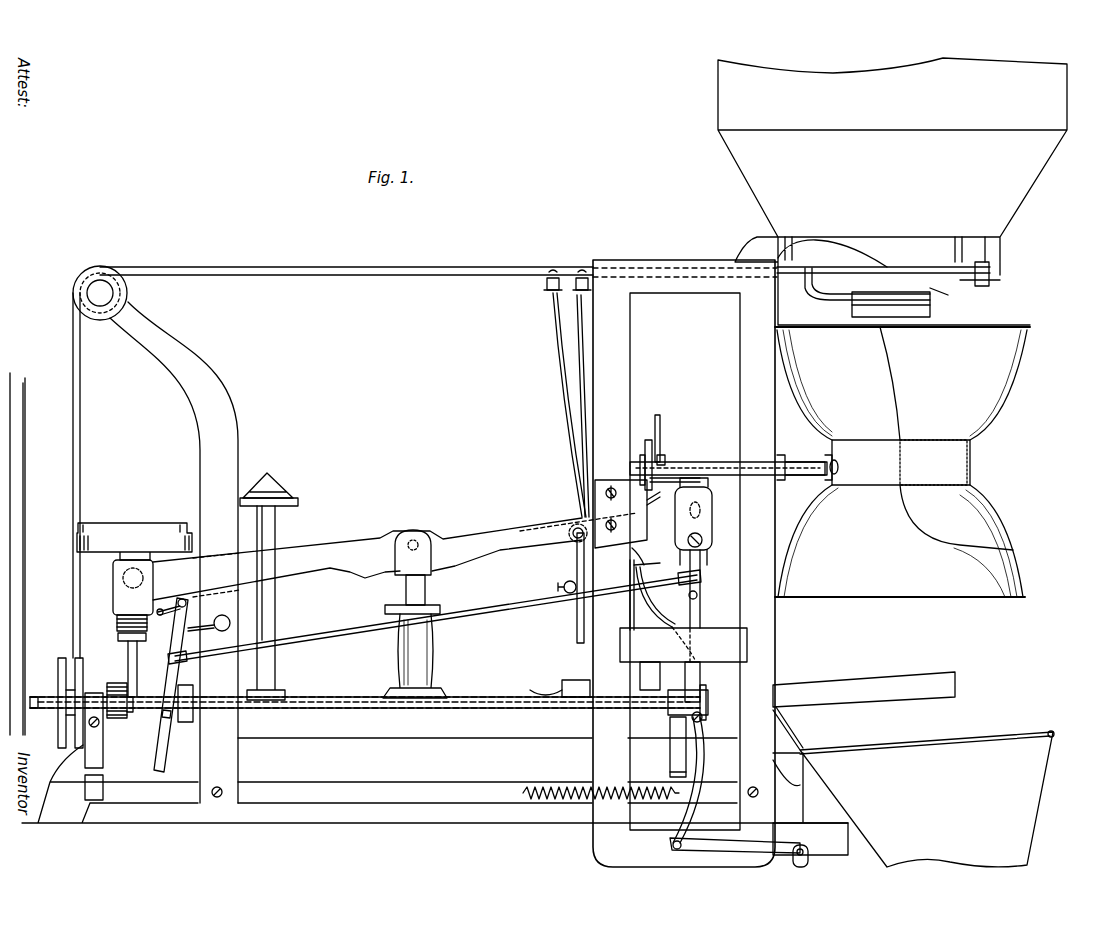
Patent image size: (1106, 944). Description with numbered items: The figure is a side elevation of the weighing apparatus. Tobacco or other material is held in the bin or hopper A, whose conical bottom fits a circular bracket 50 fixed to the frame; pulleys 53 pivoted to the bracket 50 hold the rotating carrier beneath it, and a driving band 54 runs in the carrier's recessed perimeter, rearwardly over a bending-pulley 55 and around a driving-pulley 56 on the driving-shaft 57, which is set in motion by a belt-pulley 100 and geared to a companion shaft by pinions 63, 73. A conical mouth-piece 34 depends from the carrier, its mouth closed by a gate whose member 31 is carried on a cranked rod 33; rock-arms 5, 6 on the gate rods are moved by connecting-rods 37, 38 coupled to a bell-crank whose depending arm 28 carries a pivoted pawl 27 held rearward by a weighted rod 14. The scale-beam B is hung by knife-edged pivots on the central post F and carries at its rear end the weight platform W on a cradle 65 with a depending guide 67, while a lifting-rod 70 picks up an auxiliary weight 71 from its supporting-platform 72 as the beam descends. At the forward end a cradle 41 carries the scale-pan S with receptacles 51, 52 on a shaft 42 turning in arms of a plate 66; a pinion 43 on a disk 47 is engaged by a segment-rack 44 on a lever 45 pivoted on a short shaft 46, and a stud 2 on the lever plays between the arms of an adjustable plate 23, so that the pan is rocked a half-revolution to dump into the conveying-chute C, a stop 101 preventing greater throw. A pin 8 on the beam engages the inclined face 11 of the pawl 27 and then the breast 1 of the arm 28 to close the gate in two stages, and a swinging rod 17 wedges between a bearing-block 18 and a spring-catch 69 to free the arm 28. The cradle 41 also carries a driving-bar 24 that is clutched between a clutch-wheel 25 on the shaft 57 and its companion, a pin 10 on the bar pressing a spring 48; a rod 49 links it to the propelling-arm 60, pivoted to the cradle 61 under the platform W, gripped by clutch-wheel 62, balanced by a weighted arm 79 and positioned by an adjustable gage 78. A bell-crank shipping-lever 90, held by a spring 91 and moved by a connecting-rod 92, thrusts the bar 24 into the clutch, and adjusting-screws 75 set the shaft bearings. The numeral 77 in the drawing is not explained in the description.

The bending-pulley 55 is at (128, 291).
The driving band or cord 54 is at (403, 280).
The belt-pulley 100 is at (30, 590).
The driving-pulley 56 is at (63, 657).
The adjusting-screws 75 is at (103, 730).
The driving-shaft 57 is at (352, 710).
The pinion 63 is at (113, 683).
The driving clutch-wheel 62 is at (184, 723).
The weight-receiving platform W is at (134, 541).
The cradle 61 is at (133, 587).
The cradle 65 is at (117, 626).
The propelling-arm 60 is at (165, 762).
The depending guide 67 is at (165, 700).
The adjustable gage 78 is at (160, 618).
The weighted arm 79 is at (214, 631).
The rod 49 is at (497, 608).
The scale-beam B is at (370, 559).
The fulcrum F is at (415, 614).
The lifting-rod 70 is at (277, 530).
The supporting-platform 72 is at (299, 503).
The auxiliary weight 71 is at (283, 480).
The rock-arm 5 is at (551, 292).
The rock-arm 6 is at (586, 292).
The connecting-rod 37 is at (565, 374).
The connecting-rod 38 is at (582, 377).
The swinging rod 17 is at (577, 641).
The weighted rod 14 is at (560, 582).
The plate 23 is at (621, 514).
The pin 8 is at (578, 525).
The stud 2 is at (652, 507).
The lever 45 is at (675, 485).
The cradle 41 is at (712, 548).
The plate 66 is at (712, 486).
The pin 10 is at (698, 595).
The spring 48 is at (660, 615).
The pawl 27 is at (645, 575).
The breast 1 is at (644, 596).
The inclined face 11 is at (638, 553).
The short shaft 46 is at (718, 462).
The disk 47 is at (648, 440).
The segment-rack 44 is at (660, 418).
The pinion 43 is at (665, 455).
The shaft 42 is at (803, 460).
The depending arm 28 is at (648, 665).
The driving-bar 24 is at (705, 670).
The driving clutch-wheel 25 is at (708, 710).
The lever 77 is at (702, 735).
The pinion 73 is at (670, 740).
The spring 91 is at (570, 790).
The shipping-lever 90 is at (722, 845).
The connecting-rod 92 is at (808, 858).
The bearing-block 18 is at (576, 689).
The spring-catch 69 is at (562, 688).
The stop 101 is at (864, 689).
The conveying-chute C is at (913, 787).
The bin or hopper A is at (892, 191).
The circular bracket 50 is at (881, 252).
The pulleys 53 is at (987, 276).
The rod 33 is at (822, 302).
The gate member 31 is at (891, 305).
The conical mouth-piece 34 is at (948, 295).
The scale-pan S is at (902, 462).
The receptacle 51 is at (902, 385).
The receptacle 52 is at (900, 541).